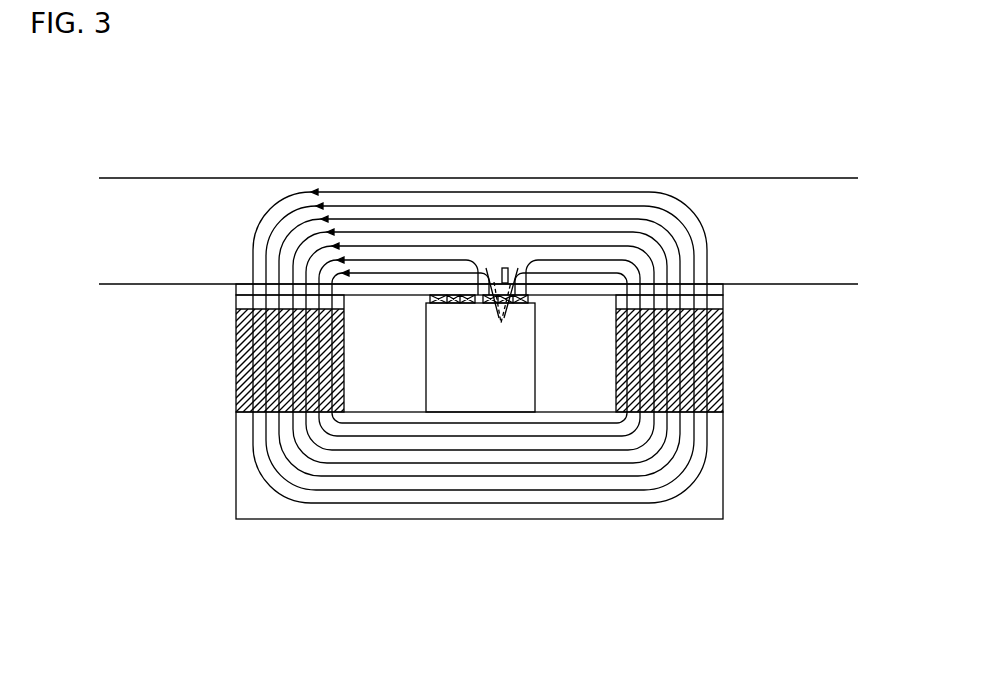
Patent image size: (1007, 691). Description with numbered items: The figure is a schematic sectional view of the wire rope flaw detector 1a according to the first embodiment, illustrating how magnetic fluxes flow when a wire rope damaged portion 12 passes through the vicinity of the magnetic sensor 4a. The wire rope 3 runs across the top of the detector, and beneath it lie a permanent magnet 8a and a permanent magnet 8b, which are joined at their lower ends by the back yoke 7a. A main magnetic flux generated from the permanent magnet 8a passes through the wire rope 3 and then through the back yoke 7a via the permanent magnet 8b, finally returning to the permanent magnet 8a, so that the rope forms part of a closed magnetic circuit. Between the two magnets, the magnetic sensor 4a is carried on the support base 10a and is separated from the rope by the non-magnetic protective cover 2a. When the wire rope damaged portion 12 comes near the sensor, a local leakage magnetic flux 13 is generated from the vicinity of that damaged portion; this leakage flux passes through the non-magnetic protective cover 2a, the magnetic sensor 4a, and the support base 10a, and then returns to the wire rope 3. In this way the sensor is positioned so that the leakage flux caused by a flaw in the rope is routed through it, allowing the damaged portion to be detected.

The wire rope flaw detector 1a is at (481, 356).
The non-magnetic protective cover 2a is at (715, 287).
The wire rope 3 is at (180, 225).
The magnetic sensor 4a is at (463, 295).
The back yoke 7a is at (485, 508).
The permanent magnet 8a is at (708, 362).
The permanent magnet 8b is at (245, 366).
The support base 10a is at (458, 343).
The wire rope damaged portion 12 is at (508, 268).
The local leakage magnetic flux 13 is at (503, 322).